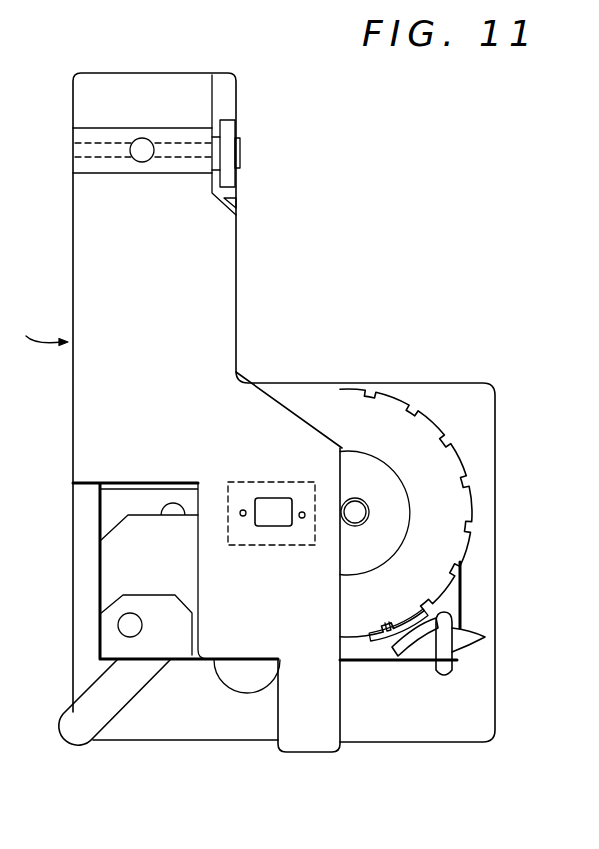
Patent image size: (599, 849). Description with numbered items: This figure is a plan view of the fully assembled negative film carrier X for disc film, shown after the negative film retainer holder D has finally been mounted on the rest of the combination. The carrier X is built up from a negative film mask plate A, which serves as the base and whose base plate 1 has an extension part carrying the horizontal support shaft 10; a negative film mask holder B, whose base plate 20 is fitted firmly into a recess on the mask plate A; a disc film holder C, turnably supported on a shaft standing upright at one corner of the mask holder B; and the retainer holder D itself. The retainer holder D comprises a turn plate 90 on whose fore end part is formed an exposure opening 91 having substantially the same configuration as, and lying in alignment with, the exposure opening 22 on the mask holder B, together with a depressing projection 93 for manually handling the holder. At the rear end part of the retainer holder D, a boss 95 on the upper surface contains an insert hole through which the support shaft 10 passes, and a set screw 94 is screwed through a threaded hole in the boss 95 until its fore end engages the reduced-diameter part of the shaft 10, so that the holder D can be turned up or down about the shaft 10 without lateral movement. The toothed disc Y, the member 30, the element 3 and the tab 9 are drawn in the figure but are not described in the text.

The base plate 1 is at (73, 643).
The turn plate 90 is at (85, 188).
The boss 95 is at (176, 129).
The support shaft 10 is at (85, 152).
The set screw 94 is at (134, 141).
The tab 9 is at (227, 131).
The negative film retainer holder D is at (237, 205).
The negative film carrier X is at (39, 329).
The base plate 20 is at (108, 500).
The negative film mask holder B is at (97, 521).
The negative film mask plate A is at (208, 742).
The depressing projection 93 is at (310, 740).
The exposure opening 91 is at (336, 444).
The exposure opening 22 is at (336, 444).
The sensor 3 is at (274, 498).
The toothed disc Y is at (433, 437).
The pawl segment 30 is at (372, 652).
The disc film holder C is at (450, 598).